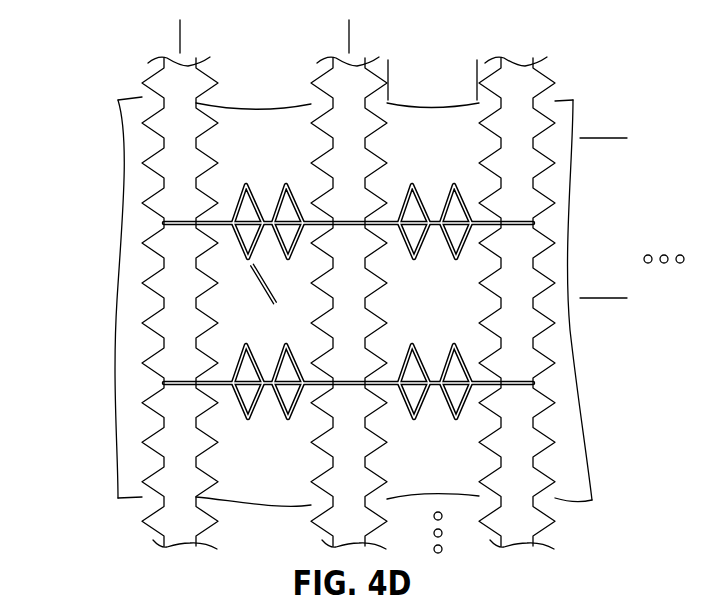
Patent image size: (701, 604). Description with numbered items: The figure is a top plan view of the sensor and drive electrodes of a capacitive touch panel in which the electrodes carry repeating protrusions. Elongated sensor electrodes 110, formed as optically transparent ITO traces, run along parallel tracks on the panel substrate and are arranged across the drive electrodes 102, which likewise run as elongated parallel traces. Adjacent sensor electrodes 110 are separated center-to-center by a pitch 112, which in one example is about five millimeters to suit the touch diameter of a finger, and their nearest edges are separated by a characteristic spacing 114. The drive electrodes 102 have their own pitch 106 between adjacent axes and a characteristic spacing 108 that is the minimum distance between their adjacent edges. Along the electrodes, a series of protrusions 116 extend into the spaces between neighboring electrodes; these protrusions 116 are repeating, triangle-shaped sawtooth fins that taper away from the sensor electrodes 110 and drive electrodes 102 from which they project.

The drive electrode 102 is at (463, 142).
The pitch 106 is at (603, 138).
The characteristic spacing 108 is at (235, 301).
The sensor electrode 110 is at (520, 82).
The pitch 112 is at (349, 34).
The characteristic spacing 114 is at (477, 71).
The protrusions 116 is at (284, 233).